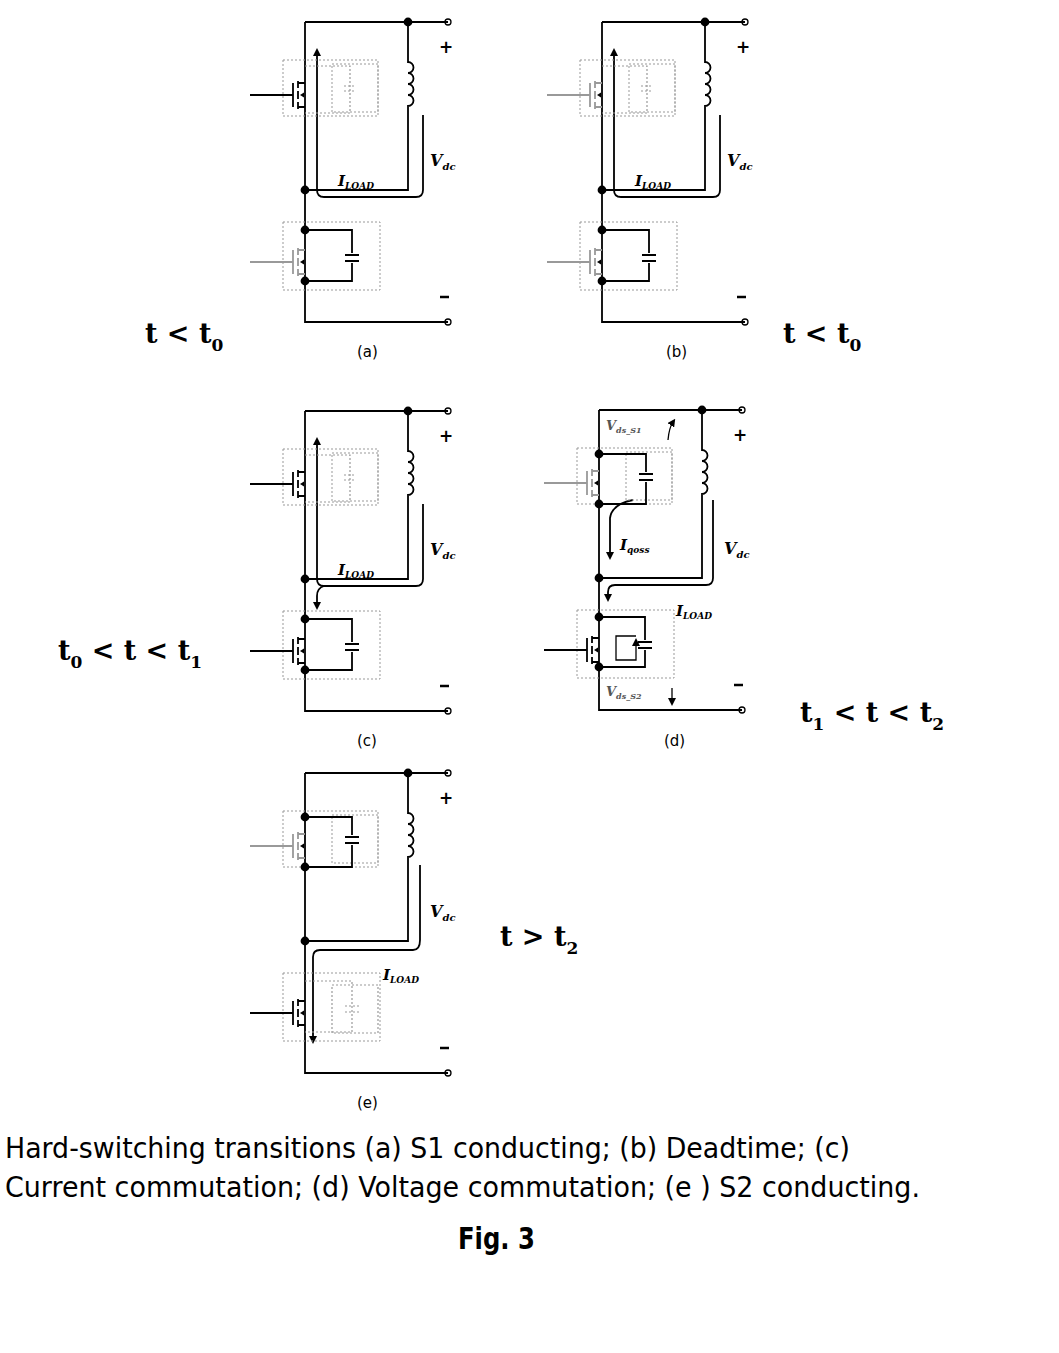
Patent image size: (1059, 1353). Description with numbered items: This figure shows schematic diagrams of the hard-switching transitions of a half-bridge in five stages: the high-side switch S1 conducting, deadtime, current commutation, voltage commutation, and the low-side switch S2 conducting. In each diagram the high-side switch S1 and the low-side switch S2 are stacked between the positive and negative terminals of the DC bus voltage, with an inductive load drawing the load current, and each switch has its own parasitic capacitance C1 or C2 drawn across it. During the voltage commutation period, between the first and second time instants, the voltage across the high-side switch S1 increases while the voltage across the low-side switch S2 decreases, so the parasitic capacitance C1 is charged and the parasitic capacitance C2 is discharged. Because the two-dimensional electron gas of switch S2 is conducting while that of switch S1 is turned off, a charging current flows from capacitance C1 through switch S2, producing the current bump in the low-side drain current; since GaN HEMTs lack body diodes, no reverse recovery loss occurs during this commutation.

The high-side switch S1 is at (462, 463).
The low-side switch S2 is at (463, 631).
The parasitic capacitance C1 is at (487, 468).
The parasitic capacitance C2 is at (487, 630).